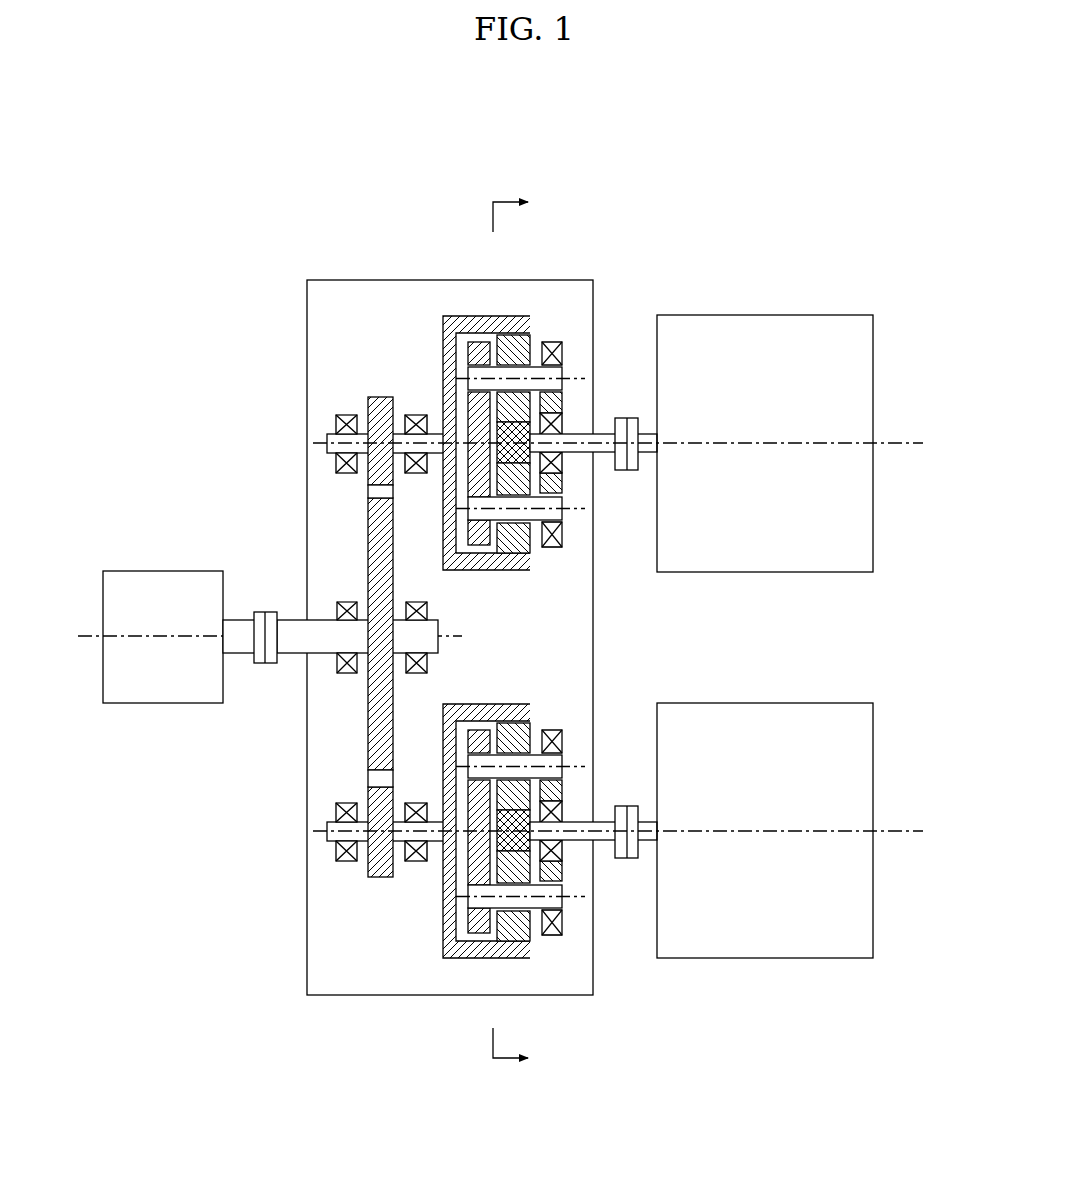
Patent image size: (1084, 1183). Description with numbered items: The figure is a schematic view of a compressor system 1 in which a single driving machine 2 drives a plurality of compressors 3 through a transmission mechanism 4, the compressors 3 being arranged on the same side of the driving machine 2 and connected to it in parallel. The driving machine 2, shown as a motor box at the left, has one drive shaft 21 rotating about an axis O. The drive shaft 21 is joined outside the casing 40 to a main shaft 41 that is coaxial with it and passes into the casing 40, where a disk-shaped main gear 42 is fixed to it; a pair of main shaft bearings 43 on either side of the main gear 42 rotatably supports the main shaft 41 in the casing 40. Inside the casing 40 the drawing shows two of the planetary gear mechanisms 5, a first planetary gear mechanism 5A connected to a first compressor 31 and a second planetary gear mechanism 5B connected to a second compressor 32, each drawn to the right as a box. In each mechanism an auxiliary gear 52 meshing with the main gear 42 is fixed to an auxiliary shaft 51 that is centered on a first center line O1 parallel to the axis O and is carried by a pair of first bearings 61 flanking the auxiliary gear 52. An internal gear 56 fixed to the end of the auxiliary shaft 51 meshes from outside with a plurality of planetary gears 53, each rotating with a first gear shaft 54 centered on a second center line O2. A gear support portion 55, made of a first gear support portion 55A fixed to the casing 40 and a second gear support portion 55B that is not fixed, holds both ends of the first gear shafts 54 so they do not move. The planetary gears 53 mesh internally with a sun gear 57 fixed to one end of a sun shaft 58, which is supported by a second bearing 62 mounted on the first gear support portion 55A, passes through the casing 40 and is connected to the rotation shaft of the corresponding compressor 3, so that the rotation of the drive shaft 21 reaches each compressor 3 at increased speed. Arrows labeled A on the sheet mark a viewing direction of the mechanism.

The compressor system 1 is at (799, 224).
The driving machine 2 is at (165, 580).
The drive shaft 21 is at (237, 627).
The compressor 3 is at (765, 608).
The first compressor 31 is at (808, 332).
The second compressor 32 is at (808, 720).
The transmission mechanism 4 is at (527, 279).
The planetary gear mechanism 5 is at (263, 646).
The first planetary gear mechanism 5A is at (333, 353).
The second planetary gear mechanism 5B is at (339, 944).
The casing 40 is at (330, 295).
The main shaft 41 is at (295, 645).
The main gear 42 is at (368, 722).
The main shaft bearing 43 is at (412, 605).
The auxiliary shaft 51 is at (330, 437).
The auxiliary gear 52 is at (373, 395).
The planetary gear 53 is at (545, 343).
The first gear shaft 54 is at (563, 347).
The gear support portion 55 is at (575, 634).
The first gear support portion 55A is at (527, 340).
The second gear support portion 55B is at (480, 345).
The internal gear 56 is at (453, 320).
The sun gear 57 is at (500, 440).
The sun shaft 58 is at (598, 440).
The first bearing 61 is at (417, 472).
The second bearing 62 is at (563, 462).
The axis O is at (90, 636).
The first center line O1 is at (897, 443).
The second center line O2 is at (571, 381).
The section view direction A is at (510, 635).